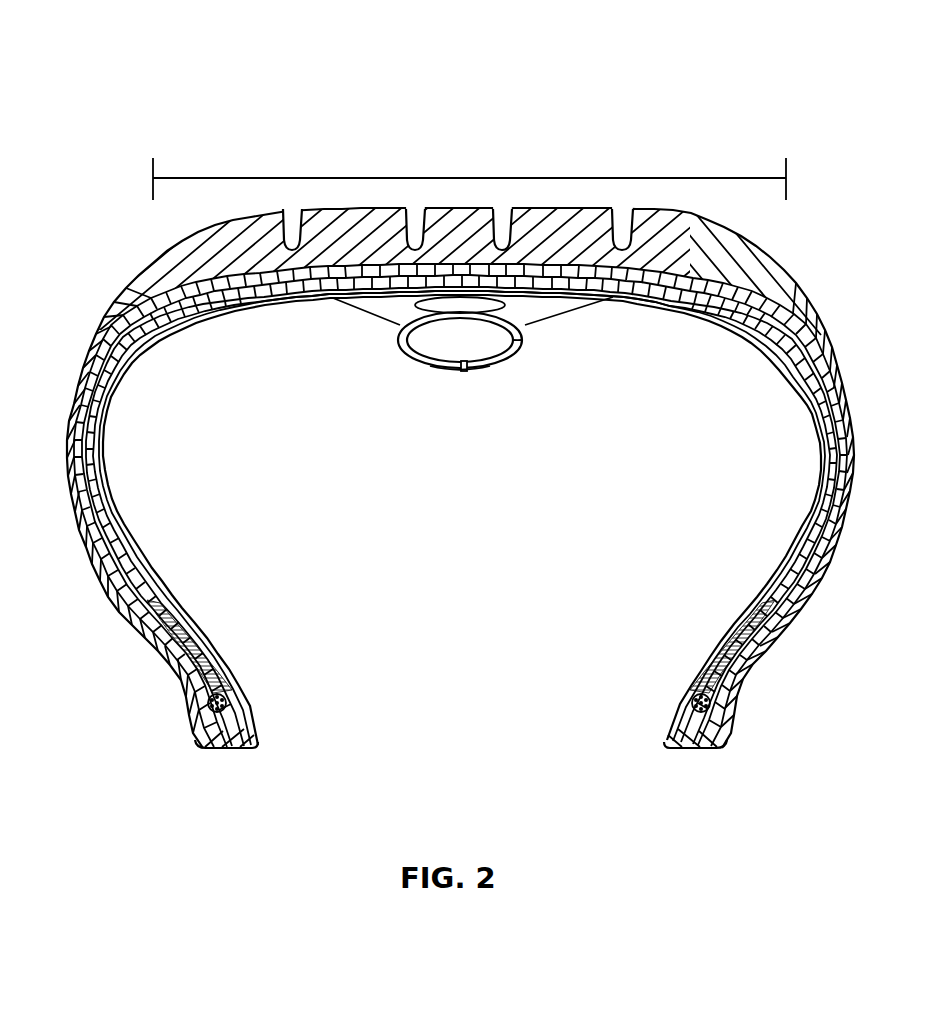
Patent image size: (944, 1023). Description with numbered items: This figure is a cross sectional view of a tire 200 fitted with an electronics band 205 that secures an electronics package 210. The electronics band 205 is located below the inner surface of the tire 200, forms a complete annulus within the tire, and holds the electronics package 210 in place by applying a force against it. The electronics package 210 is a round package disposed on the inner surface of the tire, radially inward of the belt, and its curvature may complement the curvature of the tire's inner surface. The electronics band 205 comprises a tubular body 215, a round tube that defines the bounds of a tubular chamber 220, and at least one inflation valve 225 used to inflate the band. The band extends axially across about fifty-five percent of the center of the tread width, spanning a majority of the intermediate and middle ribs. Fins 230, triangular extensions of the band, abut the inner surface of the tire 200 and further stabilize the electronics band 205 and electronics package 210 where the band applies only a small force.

The tire 200 is at (150, 52).
The electronics band 205 is at (441, 382).
The electronics package 210 is at (400, 340).
The tubular body 215 is at (497, 337).
The tubular chamber 220 is at (520, 343).
The inflation valve 225 is at (464, 372).
The fins 230 is at (373, 301).